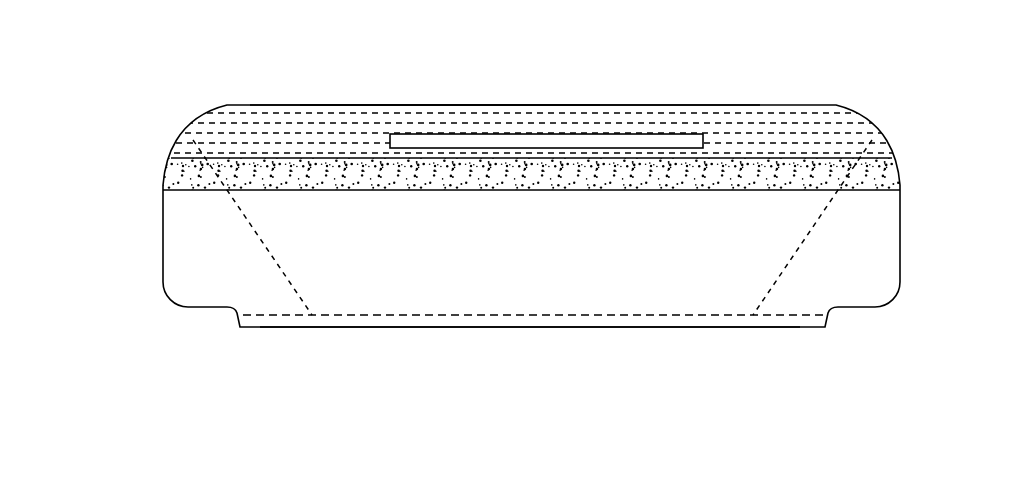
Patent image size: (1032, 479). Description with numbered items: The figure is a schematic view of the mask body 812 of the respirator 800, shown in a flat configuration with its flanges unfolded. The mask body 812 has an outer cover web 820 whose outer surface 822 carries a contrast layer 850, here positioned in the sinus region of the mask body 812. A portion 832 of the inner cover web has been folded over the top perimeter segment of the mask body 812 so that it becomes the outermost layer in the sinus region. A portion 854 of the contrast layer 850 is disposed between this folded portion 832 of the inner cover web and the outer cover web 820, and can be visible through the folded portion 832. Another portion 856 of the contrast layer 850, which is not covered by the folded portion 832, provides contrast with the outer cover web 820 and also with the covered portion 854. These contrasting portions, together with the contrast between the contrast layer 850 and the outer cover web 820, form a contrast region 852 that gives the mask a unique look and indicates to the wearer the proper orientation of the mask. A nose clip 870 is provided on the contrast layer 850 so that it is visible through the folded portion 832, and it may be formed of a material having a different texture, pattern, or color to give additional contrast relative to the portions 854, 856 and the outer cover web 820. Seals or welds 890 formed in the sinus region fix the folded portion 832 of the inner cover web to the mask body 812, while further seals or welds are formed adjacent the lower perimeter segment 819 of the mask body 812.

The respirator 800 is at (805, 43).
The mask body 812 is at (873, 117).
The lower perimeter segment 819 is at (678, 327).
The outer cover web 820 is at (345, 298).
The outer surface 822 is at (458, 295).
The portion of inner cover web 832 is at (375, 108).
The contrast layer 850 is at (163, 170).
The contrast region 852 is at (459, 161).
The portion of contrast layer 854 is at (192, 92).
The portion of contrast layer 856 is at (185, 193).
The nose clip 870 is at (562, 140).
The seals or welds 890 is at (295, 123).